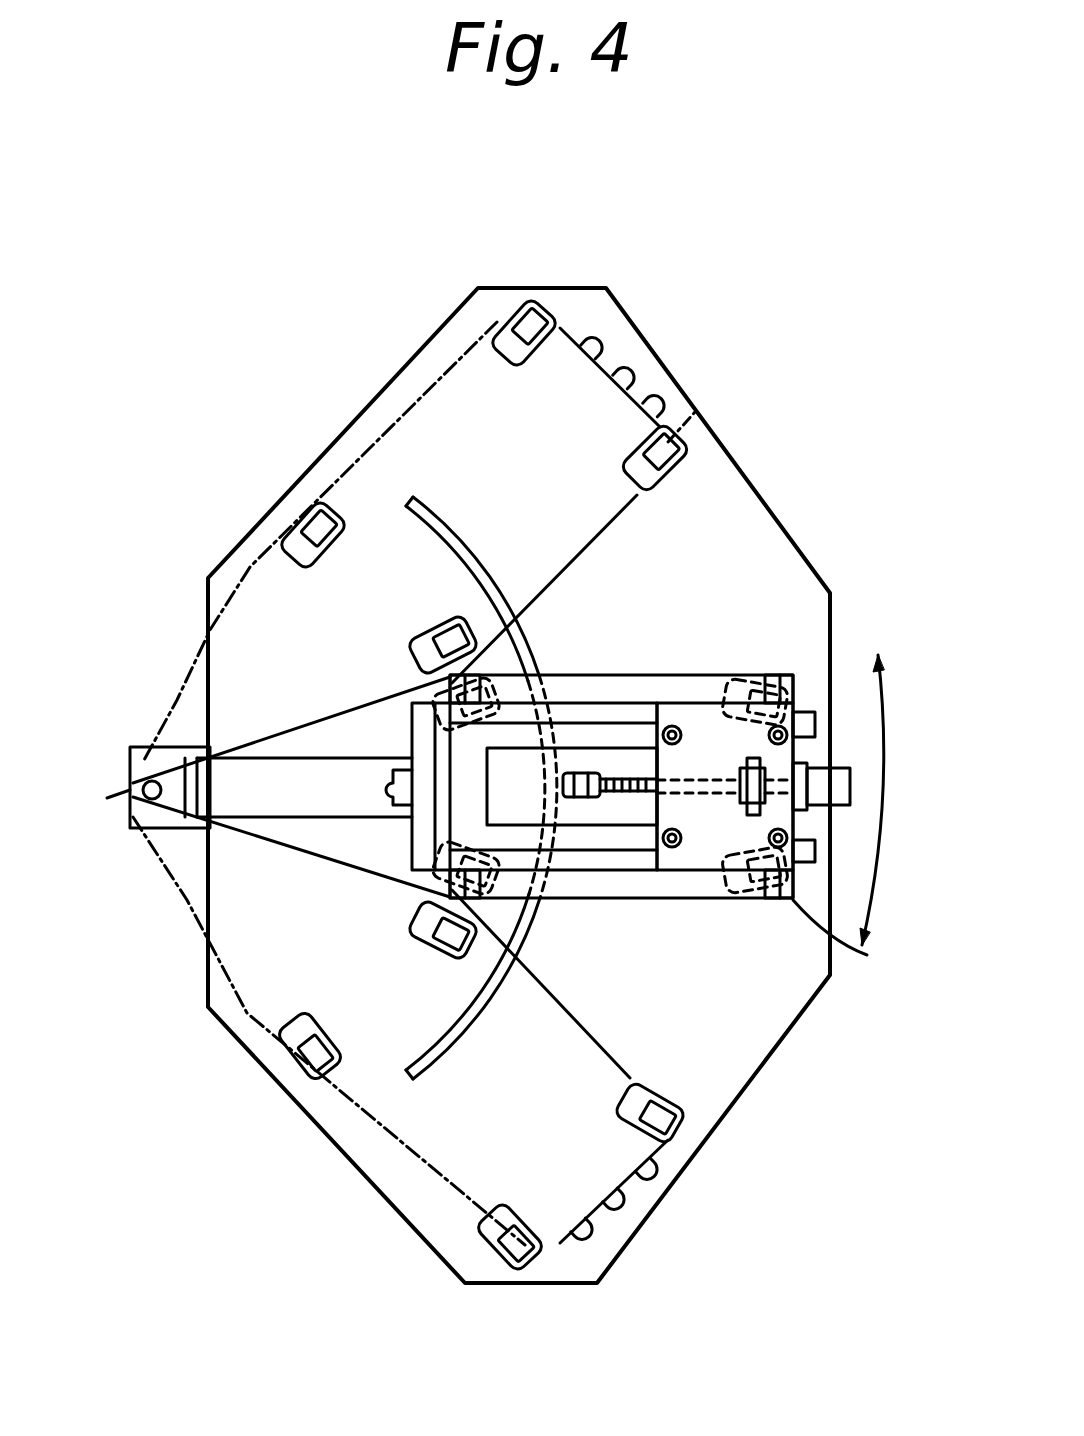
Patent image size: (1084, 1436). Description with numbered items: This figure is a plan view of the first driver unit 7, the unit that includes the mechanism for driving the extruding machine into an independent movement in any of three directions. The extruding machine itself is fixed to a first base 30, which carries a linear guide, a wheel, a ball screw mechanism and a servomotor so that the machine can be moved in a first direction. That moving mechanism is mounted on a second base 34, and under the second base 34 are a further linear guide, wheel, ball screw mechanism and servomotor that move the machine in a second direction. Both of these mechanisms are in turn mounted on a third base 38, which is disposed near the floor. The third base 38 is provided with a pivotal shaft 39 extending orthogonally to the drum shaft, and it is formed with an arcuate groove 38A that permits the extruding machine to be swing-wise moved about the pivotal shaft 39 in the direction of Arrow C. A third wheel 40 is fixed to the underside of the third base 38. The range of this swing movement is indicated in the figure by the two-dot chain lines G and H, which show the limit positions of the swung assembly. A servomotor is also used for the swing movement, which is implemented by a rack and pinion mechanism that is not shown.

The first driver unit 7 is at (818, 338).
The first base 30 is at (705, 718).
The second base 34 is at (670, 675).
The third base 38 is at (852, 946).
The arcuate groove 38A is at (530, 933).
The pivotal shaft 39 is at (128, 792).
The third wheel 40 is at (758, 690).
The two-dot chain line G is at (452, 1220).
The two-dot chain line H is at (690, 412).
The Arrow C is at (892, 800).